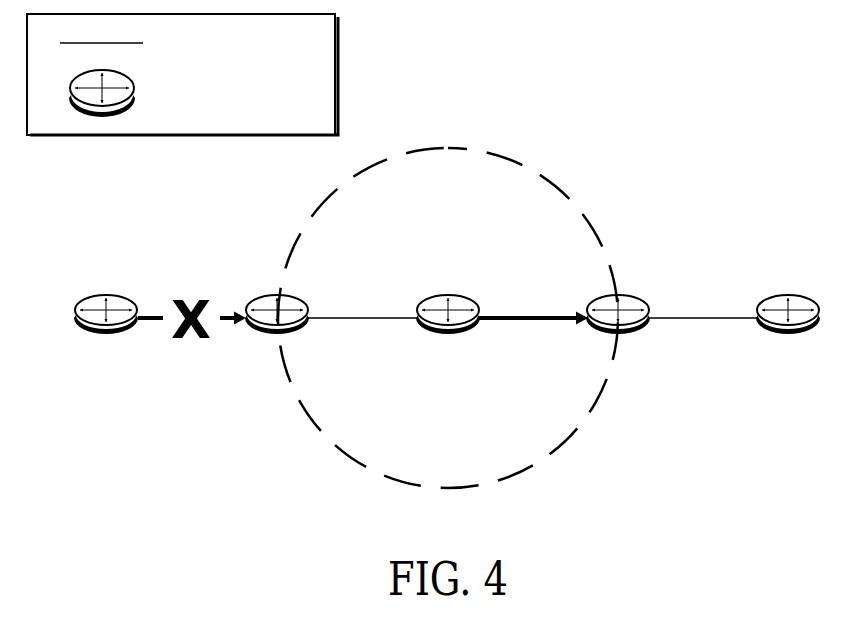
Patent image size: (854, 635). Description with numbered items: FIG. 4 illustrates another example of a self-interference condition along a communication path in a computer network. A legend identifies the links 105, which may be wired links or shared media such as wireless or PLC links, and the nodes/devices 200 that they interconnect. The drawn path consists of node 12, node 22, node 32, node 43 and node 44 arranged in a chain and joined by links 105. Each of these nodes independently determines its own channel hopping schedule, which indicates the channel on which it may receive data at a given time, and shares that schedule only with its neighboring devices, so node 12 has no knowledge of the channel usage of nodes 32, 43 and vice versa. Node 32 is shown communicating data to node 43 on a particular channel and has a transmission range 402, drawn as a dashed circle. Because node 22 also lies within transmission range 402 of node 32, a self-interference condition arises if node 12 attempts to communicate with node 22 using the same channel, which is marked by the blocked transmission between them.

The links 105 is at (408, 174).
The nodes/devices 200 is at (184, 93).
The transmission range 402 is at (537, 167).
The node 12 is at (106, 334).
The node 22 is at (274, 334).
The node 32 is at (448, 334).
The node 43 is at (620, 334).
The node 44 is at (788, 334).